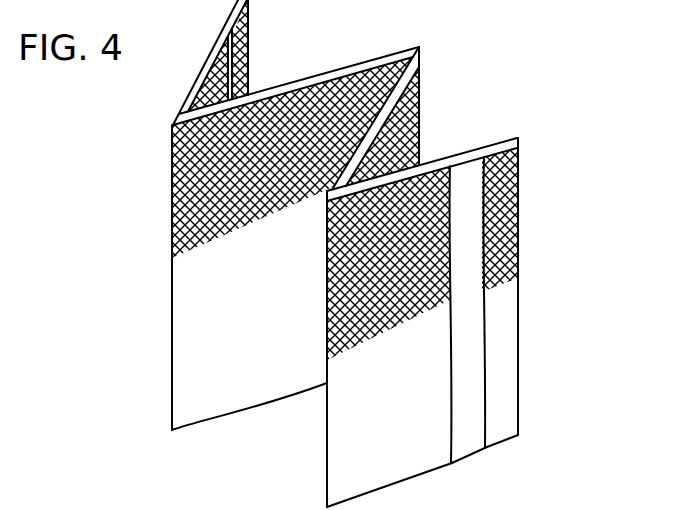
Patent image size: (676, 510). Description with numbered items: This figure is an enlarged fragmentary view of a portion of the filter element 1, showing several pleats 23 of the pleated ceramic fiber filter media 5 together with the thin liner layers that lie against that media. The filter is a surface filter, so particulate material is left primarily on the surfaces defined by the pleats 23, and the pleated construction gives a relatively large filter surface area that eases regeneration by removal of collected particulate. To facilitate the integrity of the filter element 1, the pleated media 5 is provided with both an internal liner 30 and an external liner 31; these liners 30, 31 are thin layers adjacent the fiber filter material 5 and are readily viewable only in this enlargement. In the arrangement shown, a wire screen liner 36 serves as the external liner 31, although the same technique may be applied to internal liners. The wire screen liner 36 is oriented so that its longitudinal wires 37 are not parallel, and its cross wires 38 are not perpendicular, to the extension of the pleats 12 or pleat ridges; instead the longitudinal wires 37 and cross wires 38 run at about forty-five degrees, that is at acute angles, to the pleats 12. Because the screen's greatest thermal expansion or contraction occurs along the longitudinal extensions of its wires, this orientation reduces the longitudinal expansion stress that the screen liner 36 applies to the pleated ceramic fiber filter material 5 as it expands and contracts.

The filter element 1 is at (547, 508).
The pleated ceramic fiber filter media 5 is at (475, 320).
The pleats 12 is at (172, 283).
The pleats 23 is at (180, 110).
The internal liner 30 is at (402, 110).
The external liner 31 is at (327, 297).
The wire screen liner 36 is at (325, 248).
The longitudinal wires 37 is at (255, 112).
The cross wires 38 is at (323, 73).